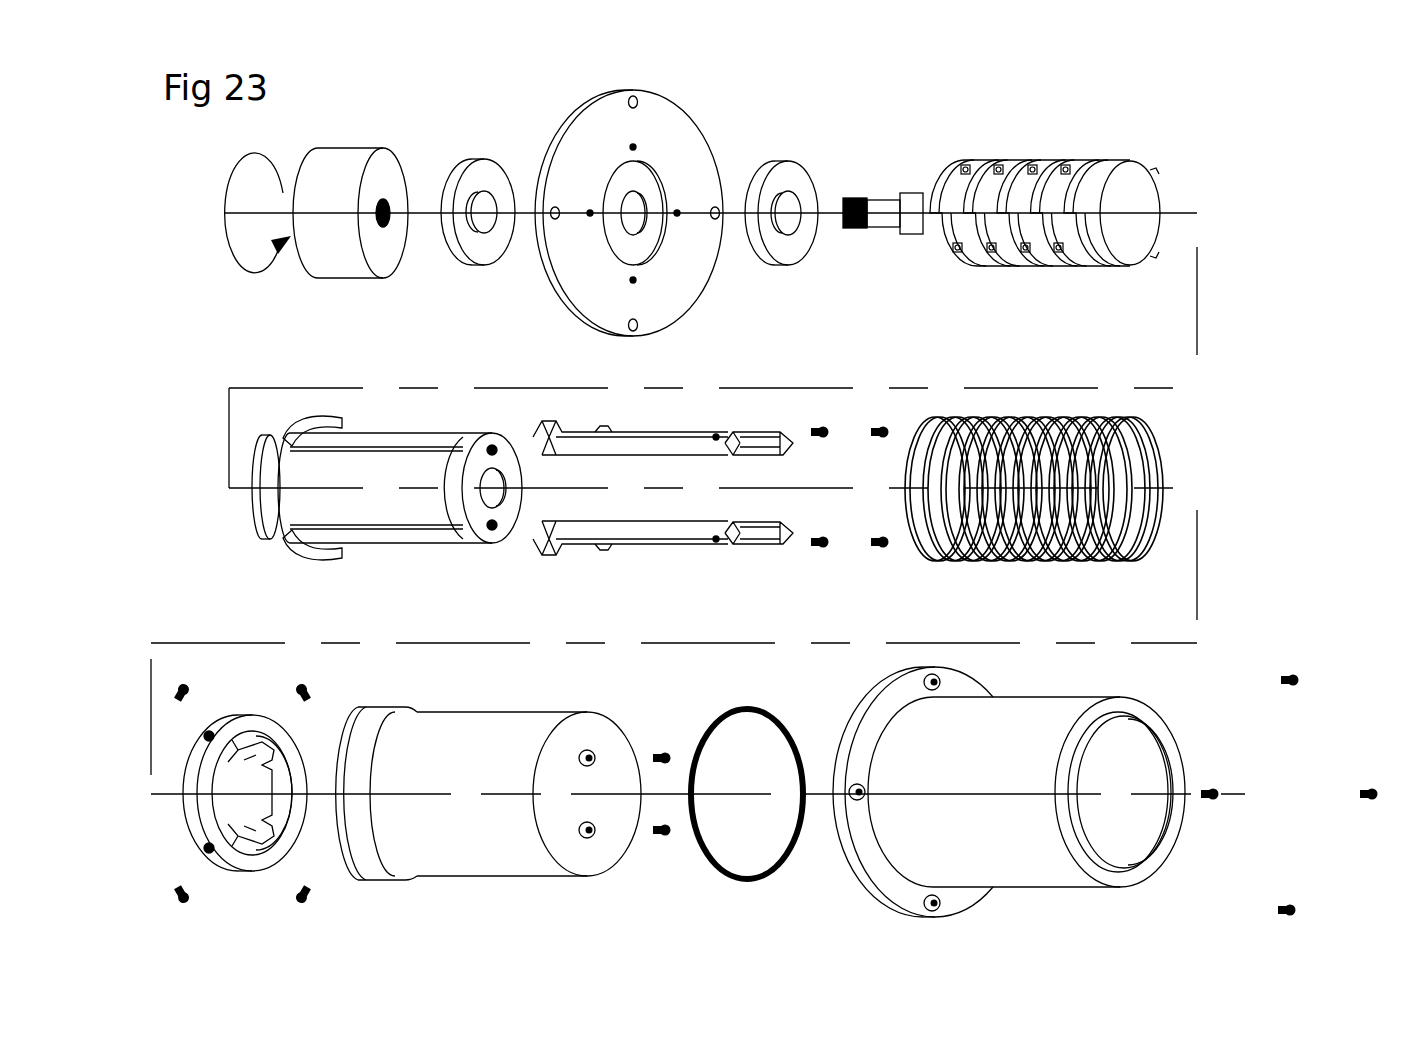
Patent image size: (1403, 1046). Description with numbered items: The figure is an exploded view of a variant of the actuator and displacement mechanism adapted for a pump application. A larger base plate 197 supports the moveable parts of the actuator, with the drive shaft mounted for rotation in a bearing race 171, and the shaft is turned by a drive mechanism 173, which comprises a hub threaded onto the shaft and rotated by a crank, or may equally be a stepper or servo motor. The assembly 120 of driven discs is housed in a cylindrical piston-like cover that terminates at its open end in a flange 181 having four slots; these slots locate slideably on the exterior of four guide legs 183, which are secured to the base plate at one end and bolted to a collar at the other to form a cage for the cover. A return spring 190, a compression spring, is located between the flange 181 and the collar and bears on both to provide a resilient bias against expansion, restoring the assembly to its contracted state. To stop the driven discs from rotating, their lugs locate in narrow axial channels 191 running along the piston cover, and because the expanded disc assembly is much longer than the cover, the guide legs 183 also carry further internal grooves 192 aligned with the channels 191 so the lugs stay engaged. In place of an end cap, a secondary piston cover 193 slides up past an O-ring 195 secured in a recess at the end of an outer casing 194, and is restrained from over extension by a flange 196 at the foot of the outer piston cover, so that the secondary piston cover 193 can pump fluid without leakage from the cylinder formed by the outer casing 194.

The assembly 120 is at (1035, 155).
The bearing race 171 is at (467, 157).
The drive mechanism 173 is at (363, 147).
The flange 181 is at (263, 530).
The guide legs 183 is at (627, 543).
The return spring 190 is at (1037, 417).
The channels 191 is at (432, 527).
The internal grooves 192 is at (777, 518).
The secondary piston cover 193 is at (573, 713).
The outer casing 194 is at (1043, 697).
The O-ring 195 is at (760, 708).
The flange 196 is at (370, 708).
The base plate 197 is at (710, 143).